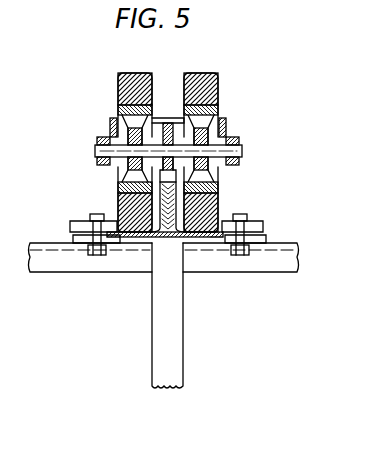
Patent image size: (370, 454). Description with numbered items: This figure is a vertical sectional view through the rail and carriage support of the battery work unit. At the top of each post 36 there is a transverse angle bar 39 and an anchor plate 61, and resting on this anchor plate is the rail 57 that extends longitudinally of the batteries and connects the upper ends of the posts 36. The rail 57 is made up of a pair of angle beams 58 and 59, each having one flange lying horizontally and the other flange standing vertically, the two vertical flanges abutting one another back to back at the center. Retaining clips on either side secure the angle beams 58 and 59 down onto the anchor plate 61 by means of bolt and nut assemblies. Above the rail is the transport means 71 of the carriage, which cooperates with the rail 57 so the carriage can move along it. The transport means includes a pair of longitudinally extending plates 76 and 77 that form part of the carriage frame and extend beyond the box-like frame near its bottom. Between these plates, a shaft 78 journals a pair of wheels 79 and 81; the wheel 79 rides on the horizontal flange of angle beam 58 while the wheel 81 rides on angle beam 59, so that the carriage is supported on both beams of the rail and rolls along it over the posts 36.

The transport means 71 is at (227, 85).
The wheel 79 is at (137, 75).
The wheel 81 is at (200, 77).
The longitudinally extending plate 76 is at (110, 122).
The longitudinally extending plate 77 is at (230, 123).
The shaft 78 is at (95, 151).
The rail 57 is at (148, 240).
The anchor plate 61 is at (200, 247).
The transverse angle bar 39 is at (45, 262).
The post 36 is at (162, 357).
The angle beam 58 is at (120, 234).
The angle beam 59 is at (212, 236).